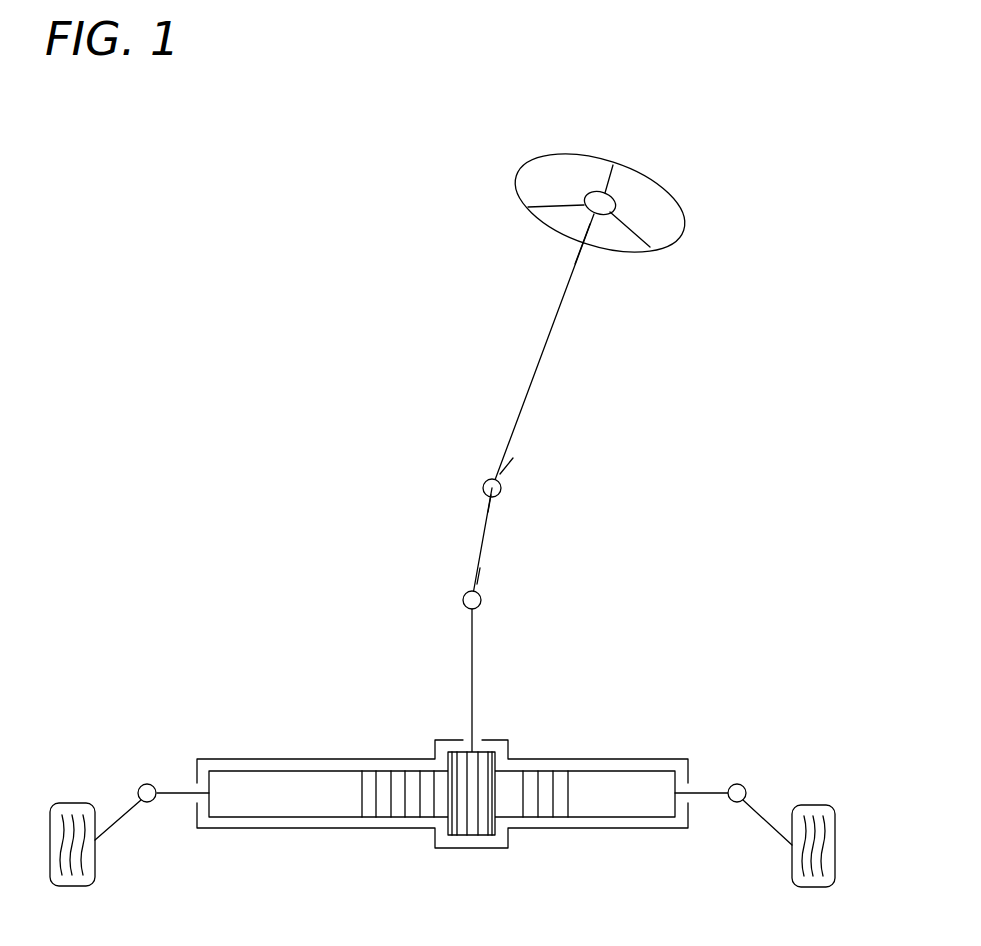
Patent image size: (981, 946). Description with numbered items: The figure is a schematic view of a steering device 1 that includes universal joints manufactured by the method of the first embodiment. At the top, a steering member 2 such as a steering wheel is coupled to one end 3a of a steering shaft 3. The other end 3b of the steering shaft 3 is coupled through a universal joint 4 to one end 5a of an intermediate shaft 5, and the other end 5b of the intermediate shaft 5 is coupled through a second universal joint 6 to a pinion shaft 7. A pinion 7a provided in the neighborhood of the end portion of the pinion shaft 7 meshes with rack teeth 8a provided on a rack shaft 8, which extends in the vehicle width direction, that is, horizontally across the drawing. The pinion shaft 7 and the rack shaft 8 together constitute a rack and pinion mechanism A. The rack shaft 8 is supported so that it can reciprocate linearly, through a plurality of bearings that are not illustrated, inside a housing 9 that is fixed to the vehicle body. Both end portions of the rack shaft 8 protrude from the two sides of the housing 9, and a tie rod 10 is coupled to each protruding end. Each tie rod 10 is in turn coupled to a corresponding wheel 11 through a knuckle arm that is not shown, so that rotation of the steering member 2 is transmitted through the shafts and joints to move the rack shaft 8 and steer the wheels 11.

The steering device 1 is at (665, 151).
The steering member 2 is at (572, 152).
The steering shaft 3 is at (526, 368).
The one end of the steering shaft 3a is at (581, 264).
The other end of the steering shaft 3b is at (512, 465).
The universal joint 4 is at (484, 480).
The intermediate shaft 5 is at (470, 542).
The one end of the intermediate shaft 5a is at (492, 502).
The other end of the intermediate shaft 5b is at (480, 578).
The universal joint 6 is at (481, 605).
The pinion shaft 7 is at (487, 686).
The pinion 7a is at (458, 836).
The rack shaft 8 is at (553, 830).
The rack teeth 8a is at (410, 806).
The housing 9 is at (345, 758).
The tie rod 10 is at (125, 818).
The wheel 11 is at (72, 887).
The rack and pinion mechanism A is at (506, 862).